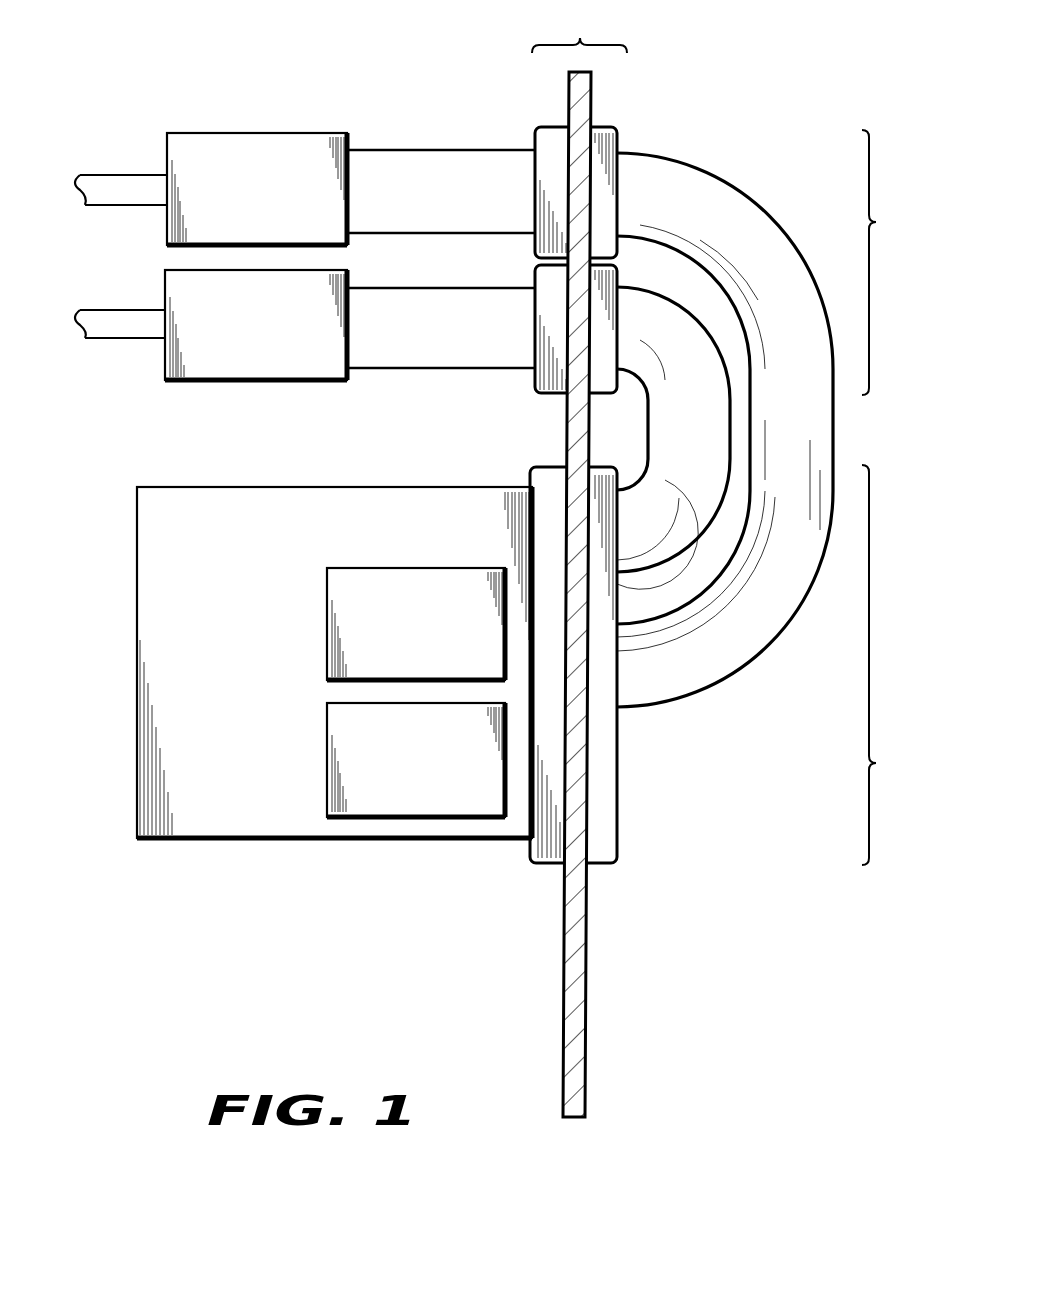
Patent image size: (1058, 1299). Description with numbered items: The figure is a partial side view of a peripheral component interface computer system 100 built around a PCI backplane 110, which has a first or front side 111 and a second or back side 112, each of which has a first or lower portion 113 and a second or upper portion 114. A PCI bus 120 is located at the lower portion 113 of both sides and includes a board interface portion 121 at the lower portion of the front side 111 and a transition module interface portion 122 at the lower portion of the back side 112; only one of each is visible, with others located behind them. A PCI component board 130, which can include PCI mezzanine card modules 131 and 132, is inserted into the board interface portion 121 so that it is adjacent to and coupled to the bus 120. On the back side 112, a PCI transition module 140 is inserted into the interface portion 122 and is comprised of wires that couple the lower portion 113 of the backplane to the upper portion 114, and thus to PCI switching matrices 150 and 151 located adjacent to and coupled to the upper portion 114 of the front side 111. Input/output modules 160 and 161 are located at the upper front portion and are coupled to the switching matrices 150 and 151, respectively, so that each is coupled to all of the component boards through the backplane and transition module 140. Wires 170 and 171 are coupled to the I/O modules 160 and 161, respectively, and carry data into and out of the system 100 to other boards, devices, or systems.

The PCI computer system 100 is at (207, 1048).
The PCI backplane 110 is at (579, 30).
The first or front side 111 is at (572, 97).
The second or back side 112 is at (595, 92).
The first or lower portion 113 is at (893, 665).
The second or upper portion 114 is at (894, 262).
The PCI bus 120 is at (533, 913).
The board interface portion 121 is at (531, 857).
The transition module interface portion 122 is at (613, 850).
The PCI component board 130 is at (137, 620).
The PCI mezzanine card (PMC) module 131 is at (327, 621).
The PCI mezzanine card (PMC) module 132 is at (322, 756).
The PCI transition module 140 is at (672, 410).
The PCI switching matrix 150 is at (439, 149).
The PCI switching matrix 151 is at (437, 370).
The input/output (I/O) module 160 is at (252, 133).
The input/output (I/O) module 161 is at (253, 382).
The wire 170 is at (131, 174).
The wire 171 is at (130, 340).